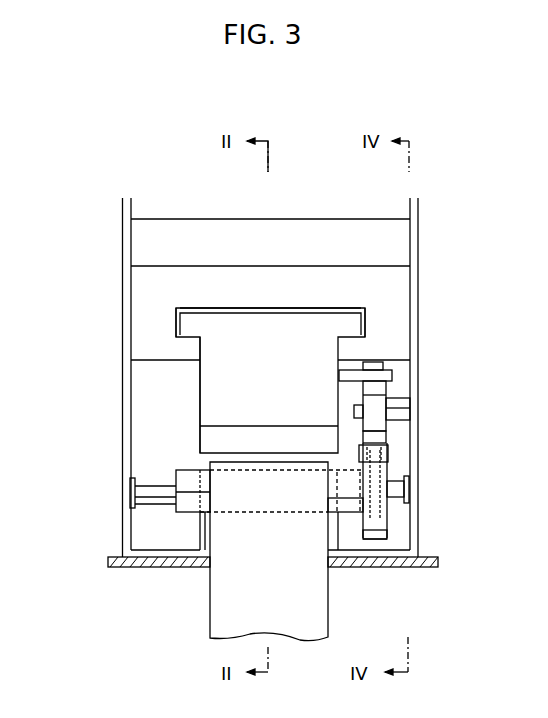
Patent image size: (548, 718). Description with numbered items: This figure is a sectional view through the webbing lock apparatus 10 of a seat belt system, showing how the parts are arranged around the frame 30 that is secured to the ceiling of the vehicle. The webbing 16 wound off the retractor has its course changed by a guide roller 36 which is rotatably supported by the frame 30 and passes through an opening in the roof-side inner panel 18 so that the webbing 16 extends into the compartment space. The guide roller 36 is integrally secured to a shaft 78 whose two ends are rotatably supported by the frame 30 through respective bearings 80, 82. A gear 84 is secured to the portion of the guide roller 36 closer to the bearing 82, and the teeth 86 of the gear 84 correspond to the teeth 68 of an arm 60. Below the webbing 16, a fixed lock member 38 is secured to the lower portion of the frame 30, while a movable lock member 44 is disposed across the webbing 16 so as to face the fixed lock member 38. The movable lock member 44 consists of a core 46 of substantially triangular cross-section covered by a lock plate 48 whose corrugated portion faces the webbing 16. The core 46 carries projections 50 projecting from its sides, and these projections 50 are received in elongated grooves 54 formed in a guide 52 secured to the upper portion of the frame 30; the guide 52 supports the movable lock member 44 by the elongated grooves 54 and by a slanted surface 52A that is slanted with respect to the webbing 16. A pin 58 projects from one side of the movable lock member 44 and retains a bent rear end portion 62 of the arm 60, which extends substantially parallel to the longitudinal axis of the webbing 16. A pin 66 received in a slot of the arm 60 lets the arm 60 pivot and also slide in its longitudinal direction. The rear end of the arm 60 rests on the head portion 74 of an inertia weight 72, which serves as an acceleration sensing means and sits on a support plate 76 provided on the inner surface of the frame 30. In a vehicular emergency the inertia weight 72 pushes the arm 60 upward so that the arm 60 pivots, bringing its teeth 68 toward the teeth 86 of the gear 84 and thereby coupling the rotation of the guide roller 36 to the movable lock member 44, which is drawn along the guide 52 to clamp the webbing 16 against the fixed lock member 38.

The webbing lock apparatus 10 is at (110, 322).
The webbing 16 is at (210, 620).
The roof-side inner panel 18 is at (127, 567).
The frame 30 is at (122, 390).
The guide roller 36 is at (190, 511).
The fixed lock member 38 is at (197, 540).
The movable lock member 44 is at (200, 412).
The core 46 is at (280, 388).
The lock plate 48 is at (200, 430).
The projections 50 is at (185, 333).
The guide 52 is at (405, 282).
The slanted surface 52A is at (269, 313).
The elongated grooves 54 is at (177, 322).
The pin 58 is at (392, 379).
The arm 60 is at (392, 400).
The bent rear end portion 62 is at (380, 368).
The pin 66 is at (354, 412).
The teeth 68 is at (363, 432).
The inertia weight 72 is at (393, 474).
The head portion 74 is at (390, 447).
The support plate 76 is at (392, 462).
The shaft 78 is at (155, 492).
The bearing 80 is at (131, 490).
The bearing 82 is at (406, 497).
The gear 84 is at (380, 515).
The teeth 86 is at (375, 539).